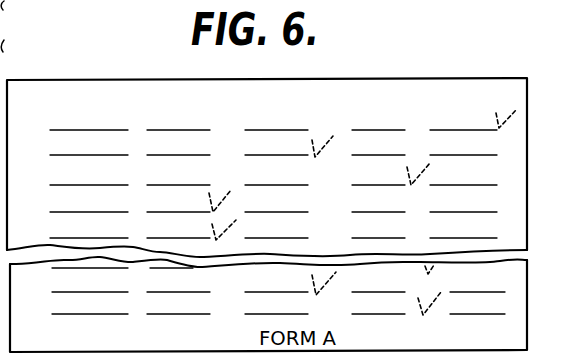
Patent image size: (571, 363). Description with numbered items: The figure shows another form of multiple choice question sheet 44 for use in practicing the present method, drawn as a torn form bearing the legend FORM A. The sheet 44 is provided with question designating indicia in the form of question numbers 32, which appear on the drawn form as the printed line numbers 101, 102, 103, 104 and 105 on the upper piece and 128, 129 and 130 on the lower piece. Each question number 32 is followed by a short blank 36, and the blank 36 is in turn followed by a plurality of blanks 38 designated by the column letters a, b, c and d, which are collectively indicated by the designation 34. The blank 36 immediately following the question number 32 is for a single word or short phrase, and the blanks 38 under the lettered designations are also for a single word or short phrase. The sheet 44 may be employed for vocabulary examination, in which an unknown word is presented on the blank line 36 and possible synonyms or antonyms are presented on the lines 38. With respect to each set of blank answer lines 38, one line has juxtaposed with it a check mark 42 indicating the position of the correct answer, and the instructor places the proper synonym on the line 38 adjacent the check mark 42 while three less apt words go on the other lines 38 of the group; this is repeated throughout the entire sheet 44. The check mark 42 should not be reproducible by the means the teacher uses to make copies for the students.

The question numbers 32 is at (37, 150).
The column designations a, b, c, d 34 is at (187, 105).
The blank line 36 is at (120, 153).
The blank answer lines 38 is at (248, 132).
The check mark 42 is at (513, 113).
The sheet 44 is at (494, 78).
The form line 101 is at (69, 129).
The form line 102 is at (69, 154).
The form line 103 is at (69, 184).
The form line 104 is at (69, 211).
The form line 105 is at (69, 237).
The form line 128 is at (71, 268).
The form line 129 is at (71, 291).
The form line 130 is at (71, 313).